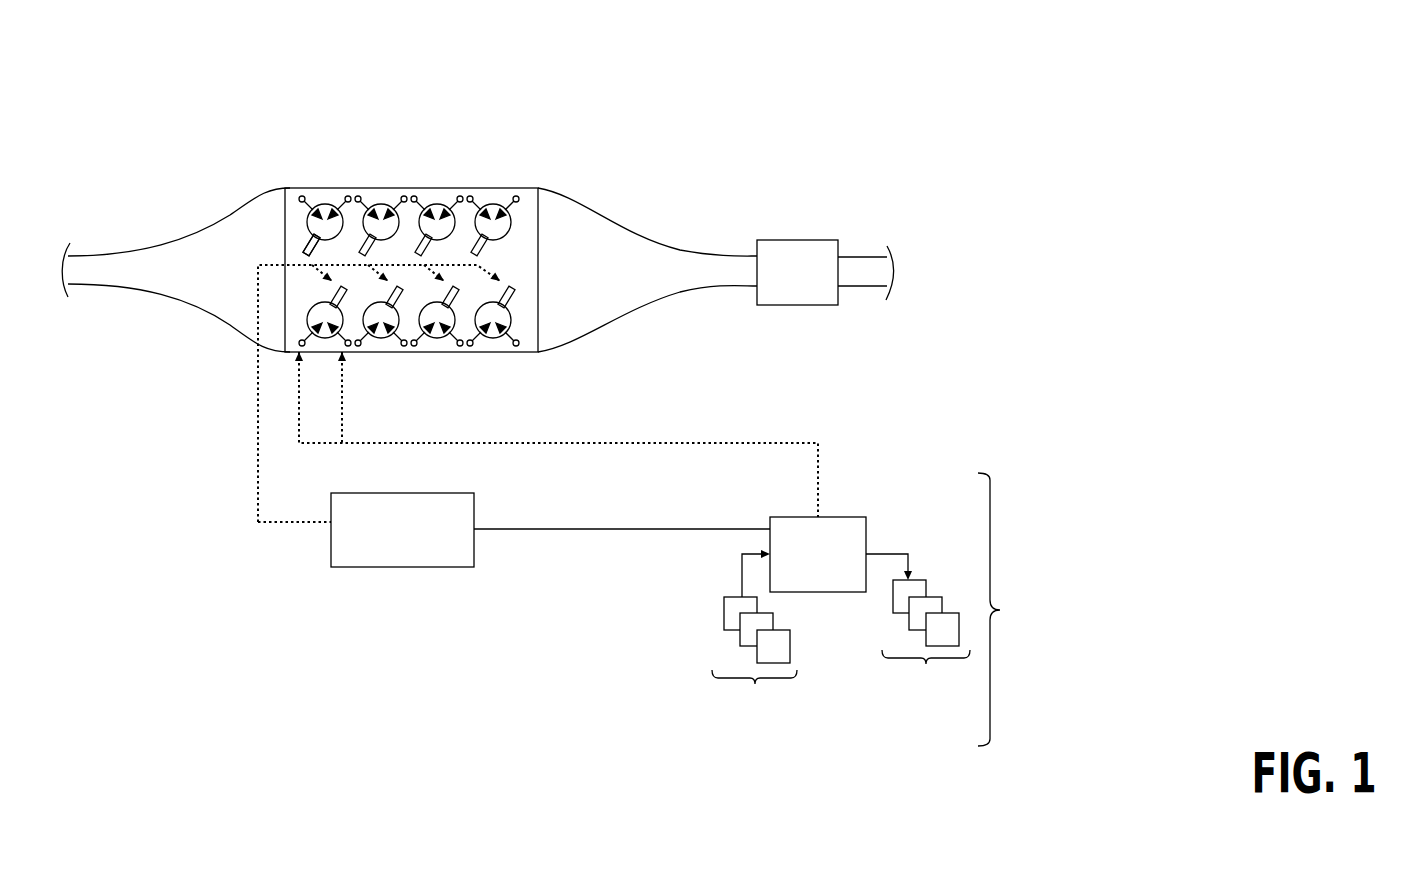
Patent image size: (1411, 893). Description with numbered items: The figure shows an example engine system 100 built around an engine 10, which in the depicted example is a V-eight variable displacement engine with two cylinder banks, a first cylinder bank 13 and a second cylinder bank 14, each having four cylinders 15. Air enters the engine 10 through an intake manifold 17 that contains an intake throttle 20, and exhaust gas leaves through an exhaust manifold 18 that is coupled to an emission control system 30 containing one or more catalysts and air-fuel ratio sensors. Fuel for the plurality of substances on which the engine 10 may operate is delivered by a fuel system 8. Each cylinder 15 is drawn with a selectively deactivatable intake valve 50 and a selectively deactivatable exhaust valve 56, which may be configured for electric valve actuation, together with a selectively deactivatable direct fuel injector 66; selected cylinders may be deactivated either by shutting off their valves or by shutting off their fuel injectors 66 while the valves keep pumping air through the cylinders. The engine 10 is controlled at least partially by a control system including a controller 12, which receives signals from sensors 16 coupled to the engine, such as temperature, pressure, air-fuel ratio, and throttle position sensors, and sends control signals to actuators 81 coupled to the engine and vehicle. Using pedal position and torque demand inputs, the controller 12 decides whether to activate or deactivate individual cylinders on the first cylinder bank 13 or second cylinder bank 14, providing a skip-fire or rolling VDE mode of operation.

The engine system 100 is at (1028, 78).
The engine 10 is at (477, 166).
The first cylinder bank 13 is at (409, 182).
The second cylinder bank 14 is at (407, 362).
The cylinders 15 is at (510, 216).
The intake manifold 17 is at (165, 251).
The exhaust manifold 18 is at (607, 244).
The intake throttle 20 is at (124, 263).
The emission control system 30 is at (797, 240).
The intake valves 50 is at (468, 344).
The exhaust valves 56 is at (507, 344).
The fuel injectors 66 is at (310, 252).
The fuel system 8 is at (550, 530).
The controller 12 is at (818, 554).
The sensors 16 is at (754, 639).
The actuators 81 is at (918, 633).